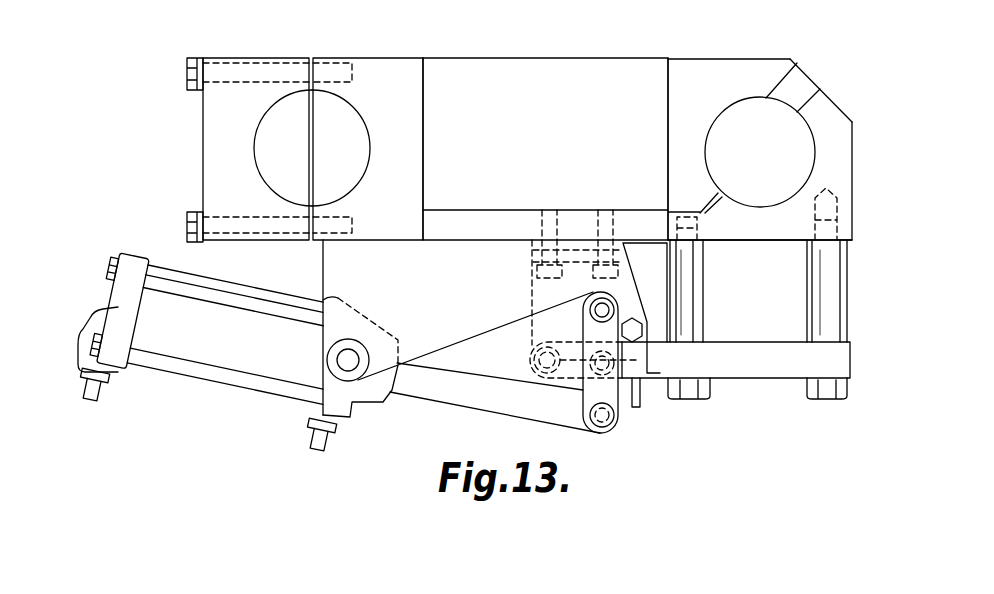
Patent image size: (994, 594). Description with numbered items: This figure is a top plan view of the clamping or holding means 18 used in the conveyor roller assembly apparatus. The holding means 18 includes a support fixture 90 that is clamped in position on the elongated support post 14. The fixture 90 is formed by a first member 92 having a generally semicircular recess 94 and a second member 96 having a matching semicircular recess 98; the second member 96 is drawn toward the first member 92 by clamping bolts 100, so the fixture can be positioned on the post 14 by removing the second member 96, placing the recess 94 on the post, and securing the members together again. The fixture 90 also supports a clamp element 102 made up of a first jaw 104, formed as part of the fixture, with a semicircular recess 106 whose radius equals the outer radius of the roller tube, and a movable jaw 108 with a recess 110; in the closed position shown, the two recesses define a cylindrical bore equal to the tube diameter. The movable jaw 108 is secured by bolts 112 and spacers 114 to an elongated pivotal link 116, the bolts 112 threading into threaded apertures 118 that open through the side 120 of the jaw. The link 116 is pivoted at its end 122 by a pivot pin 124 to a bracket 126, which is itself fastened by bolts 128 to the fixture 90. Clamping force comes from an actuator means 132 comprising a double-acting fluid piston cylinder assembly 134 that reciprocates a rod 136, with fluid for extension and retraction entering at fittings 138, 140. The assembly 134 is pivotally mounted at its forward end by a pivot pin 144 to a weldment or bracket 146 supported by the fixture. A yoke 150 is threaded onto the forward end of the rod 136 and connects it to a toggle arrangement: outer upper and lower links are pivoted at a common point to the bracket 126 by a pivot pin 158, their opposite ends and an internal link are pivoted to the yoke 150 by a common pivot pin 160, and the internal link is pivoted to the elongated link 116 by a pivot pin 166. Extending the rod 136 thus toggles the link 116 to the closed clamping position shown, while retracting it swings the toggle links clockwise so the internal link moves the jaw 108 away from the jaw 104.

The support post 14 is at (690, 320).
The holding means 18 is at (577, 53).
The support fixture 90 is at (443, 78).
The first member 92 is at (391, 35).
The semicircular recess 94 is at (368, 148).
The second member 96 is at (261, 38).
The semicircular recess 98 is at (258, 146).
The clamping bolts 100 is at (187, 73).
The clamp element 102 is at (785, 24).
The first jaw 104 is at (717, 29).
The semicircular recess 106 is at (770, 93).
The movable jaw 108 is at (832, 155).
The recess 110 is at (796, 177).
The bolts 112 is at (847, 390).
The spacers 114 is at (830, 282).
The elongated pivotal link 116 is at (766, 380).
The threaded apertures 118 is at (833, 221).
The side 120 is at (770, 242).
The end 122 is at (540, 358).
The pivot pin 124 is at (527, 382).
The bracket 126 is at (622, 282).
The bolts 128 is at (606, 212).
The actuator means 132 is at (200, 349).
The fluid actuator piston cylinder assembly 134 is at (170, 378).
The rod 136 is at (415, 398).
The fitting 138 is at (85, 386).
The fitting 140 is at (312, 442).
The pivot pin 144 is at (348, 360).
The weldment or bracket 146 is at (465, 289).
The yoke 150 is at (546, 412).
The pivot pin 158 is at (612, 305).
The pivot pin 160 is at (616, 424).
The pivot pin 166 is at (640, 357).